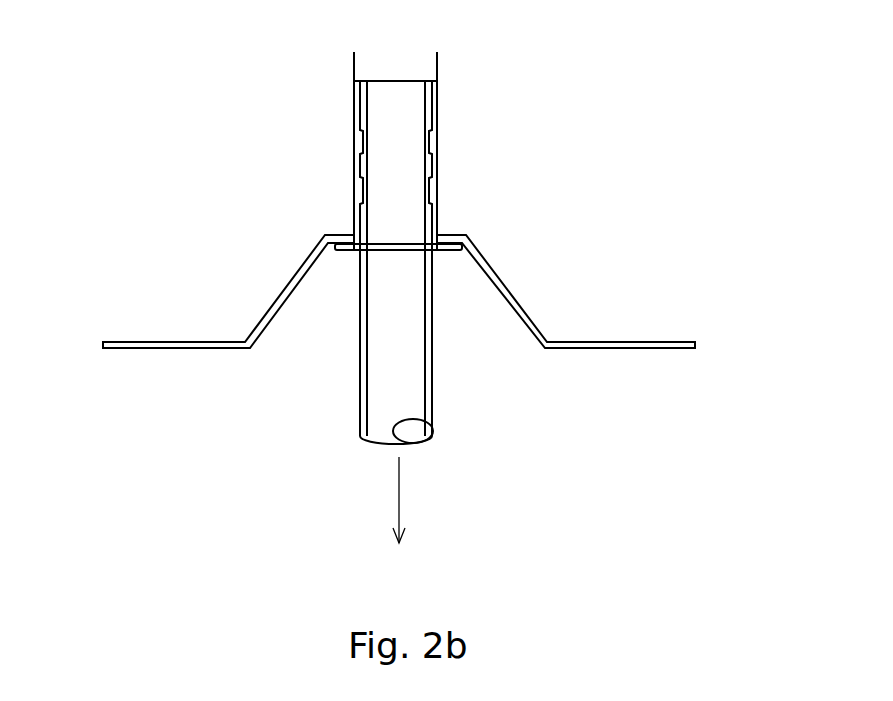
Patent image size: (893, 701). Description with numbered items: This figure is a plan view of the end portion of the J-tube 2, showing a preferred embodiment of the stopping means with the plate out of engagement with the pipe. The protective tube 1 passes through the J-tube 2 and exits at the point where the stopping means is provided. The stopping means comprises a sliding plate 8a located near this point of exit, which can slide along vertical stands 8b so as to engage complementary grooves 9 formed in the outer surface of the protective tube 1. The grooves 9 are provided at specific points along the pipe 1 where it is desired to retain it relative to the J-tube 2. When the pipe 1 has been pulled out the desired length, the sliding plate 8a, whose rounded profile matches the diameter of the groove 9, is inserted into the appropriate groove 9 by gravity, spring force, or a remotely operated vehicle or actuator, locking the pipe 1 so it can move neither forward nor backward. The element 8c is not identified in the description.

The protective tube 1 is at (433, 395).
The J-tube 2 is at (353, 63).
The grooves 9 is at (357, 145).
The sliding plate 8a is at (347, 255).
The vertical stands 8b is at (409, 250).
The flange 8c is at (598, 342).